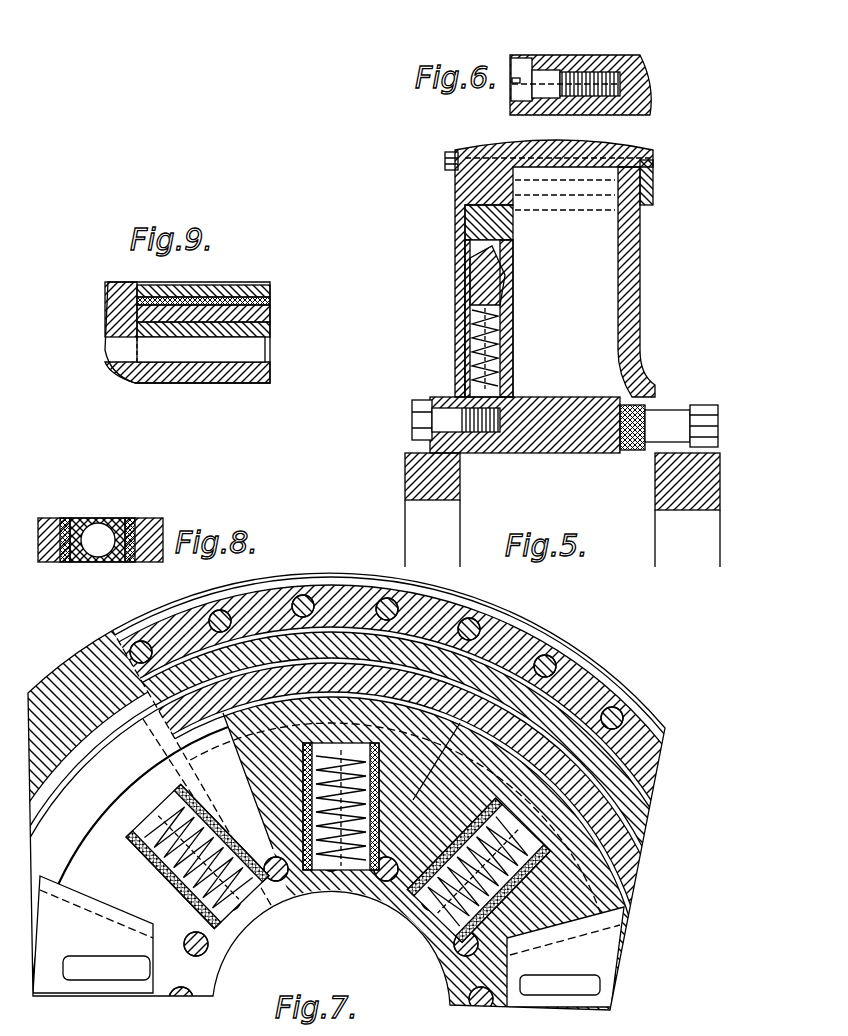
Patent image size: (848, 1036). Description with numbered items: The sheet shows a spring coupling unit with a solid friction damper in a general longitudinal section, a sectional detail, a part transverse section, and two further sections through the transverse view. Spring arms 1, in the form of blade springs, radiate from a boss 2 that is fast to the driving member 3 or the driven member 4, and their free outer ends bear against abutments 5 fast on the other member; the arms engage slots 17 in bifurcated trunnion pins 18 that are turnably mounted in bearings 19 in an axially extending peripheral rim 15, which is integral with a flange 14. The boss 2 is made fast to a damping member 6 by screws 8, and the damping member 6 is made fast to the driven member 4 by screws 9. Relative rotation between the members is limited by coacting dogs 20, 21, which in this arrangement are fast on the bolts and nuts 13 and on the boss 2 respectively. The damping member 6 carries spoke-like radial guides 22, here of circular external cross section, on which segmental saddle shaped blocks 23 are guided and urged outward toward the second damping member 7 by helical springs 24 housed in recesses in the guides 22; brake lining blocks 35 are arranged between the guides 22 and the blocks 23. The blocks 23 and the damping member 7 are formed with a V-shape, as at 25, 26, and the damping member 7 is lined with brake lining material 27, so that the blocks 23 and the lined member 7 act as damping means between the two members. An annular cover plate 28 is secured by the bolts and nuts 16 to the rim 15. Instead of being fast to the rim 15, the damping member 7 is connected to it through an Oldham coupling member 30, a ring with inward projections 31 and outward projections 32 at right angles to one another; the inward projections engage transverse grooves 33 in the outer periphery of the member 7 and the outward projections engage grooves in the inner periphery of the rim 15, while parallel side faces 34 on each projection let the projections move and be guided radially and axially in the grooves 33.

In FIG. 5, the spring arms 1 is at (618, 340).
In FIG. 9, the spring arms 1 is at (185, 305).
In FIG. 7, the spring arms 1 is at (445, 635).
In FIG. 6, the boss 2 is at (645, 108).
In FIG. 5, the boss 2 is at (528, 404).
In FIG. 5, the driving member 3 is at (680, 495).
In FIG. 5, the driven member 4 is at (440, 482).
In FIG. 5, the abutments 5 is at (638, 220).
In FIG. 7, the abutments 5 is at (425, 640).
In FIG. 6, the damping member 6 is at (515, 104).
In FIG. 5, the damping member 6 is at (480, 440).
In FIG. 7, the damping member 6 is at (440, 945).
In FIG. 5, the damping member 7 is at (470, 262).
In FIG. 7, the damping member 7 is at (630, 860).
In FIG. 6, the screws 8 is at (540, 78).
In FIG. 7, the screws 8 is at (362, 882).
In FIG. 5, the screws 9 is at (452, 418).
In FIG. 7, the screws 9 is at (345, 908).
In FIG. 5, the bolts and nuts 13 is at (670, 425).
In FIG. 5, the flange 14 is at (634, 285).
In FIG. 5, the peripheral rim 15 is at (470, 150).
In FIG. 9, the peripheral rim 15 is at (100, 278).
In FIG. 7, the peripheral rim 15 is at (285, 690).
In FIG. 5, the bolts and nuts 16 is at (448, 170).
In FIG. 9, the bolts and nuts 16 is at (235, 350).
In FIG. 7, the bolts and nuts 16 is at (385, 640).
In FIG. 5, the slots 17 is at (482, 185).
In FIG. 9, the slots 17 is at (240, 302).
In FIG. 7, the slots 17 is at (350, 650).
In FIG. 5, the bifurcated trunnion pins 18 is at (650, 180).
In FIG. 9, the bifurcated trunnion pins 18 is at (250, 312).
In FIG. 7, the bifurcated trunnion pins 18 is at (245, 690).
In FIG. 5, the bearings 19 is at (648, 200).
In FIG. 9, the bearings 19 is at (255, 330).
In FIG. 7, the bearings 19 is at (212, 688).
In FIG. 5, the dog 20 is at (640, 420).
In FIG. 7, the dog 20 is at (242, 910).
In FIG. 5, the dog 21 is at (630, 450).
In FIG. 7, the dog 21 is at (296, 870).
In FIG. 5, the radial guides 22 is at (470, 375).
In FIG. 8, the radial guides 22 is at (98, 557).
In FIG. 7, the radial guides 22 is at (250, 820).
In FIG. 5, the segmental saddle shaped blocks 23 is at (505, 290).
In FIG. 8, the segmental saddle shaped blocks 23 is at (140, 558).
In FIG. 7, the segmental saddle shaped blocks 23 is at (135, 895).
In FIG. 5, the helical springs 24 is at (500, 344).
In FIG. 7, the helical springs 24 is at (250, 800).
In FIG. 5, the V-shape 25 is at (472, 330).
In FIG. 5, the V-shape 26 is at (495, 250).
In FIG. 5, the brake lining material 27 is at (478, 275).
In FIG. 5, the annular cover plate 28 is at (445, 425).
In FIG. 5, the coupling member 30 is at (505, 225).
In FIG. 7, the coupling member 30 is at (160, 685).
In FIG. 7, the inward projections 31 is at (620, 775).
In FIG. 7, the outward projections 32 is at (82, 690).
In FIG. 7, the transverse grooves 33 is at (62, 700).
In FIG. 7, the side faces 34 is at (120, 672).
In FIG. 8, the brake lining blocks 35 is at (60, 562).
In FIG. 7, the brake lining blocks 35 is at (388, 882).